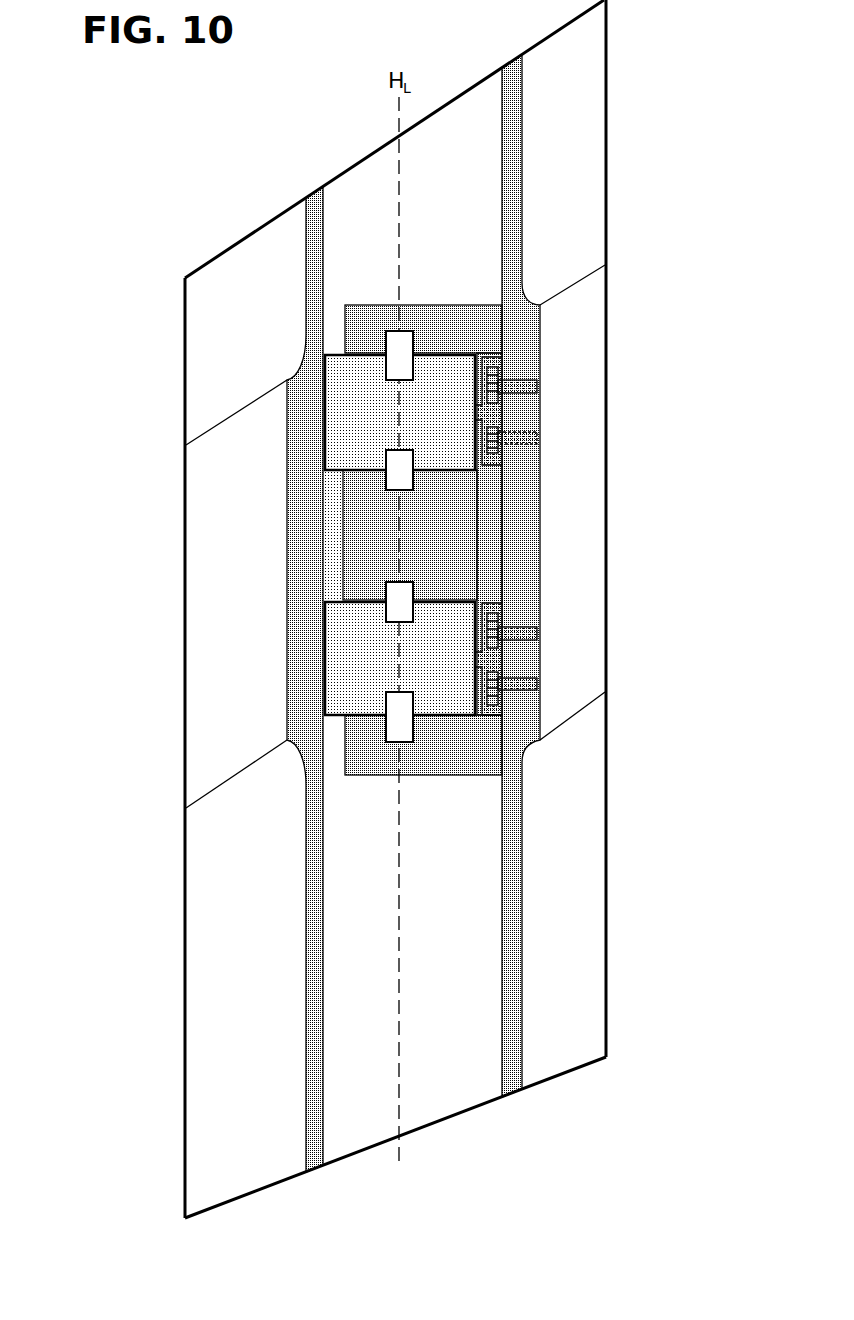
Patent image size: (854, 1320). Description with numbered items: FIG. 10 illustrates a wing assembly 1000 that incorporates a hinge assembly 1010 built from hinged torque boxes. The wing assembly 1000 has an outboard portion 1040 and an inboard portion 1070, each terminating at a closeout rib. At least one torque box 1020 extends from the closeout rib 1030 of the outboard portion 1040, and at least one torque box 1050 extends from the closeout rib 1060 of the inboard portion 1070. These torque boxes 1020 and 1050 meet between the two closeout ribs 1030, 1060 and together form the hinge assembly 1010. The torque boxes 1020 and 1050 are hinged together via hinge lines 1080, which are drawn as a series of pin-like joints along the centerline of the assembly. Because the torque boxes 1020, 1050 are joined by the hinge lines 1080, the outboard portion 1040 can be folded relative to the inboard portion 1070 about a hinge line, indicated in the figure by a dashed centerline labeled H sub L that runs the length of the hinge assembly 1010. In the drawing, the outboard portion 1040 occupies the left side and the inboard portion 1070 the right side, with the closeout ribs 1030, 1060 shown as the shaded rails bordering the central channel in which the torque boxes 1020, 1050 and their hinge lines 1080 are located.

The wing assembly 1000 is at (203, 169).
The hinge assembly 1010 is at (501, 1108).
The torque box 1020 is at (353, 437).
The closeout rib 1030 is at (284, 612).
The outboard portion 1040 is at (183, 313).
The torque box 1050 is at (650, 577).
The closeout rib 1060 is at (540, 465).
The inboard portion 1070 is at (609, 66).
The hinge lines 1080 is at (387, 331).